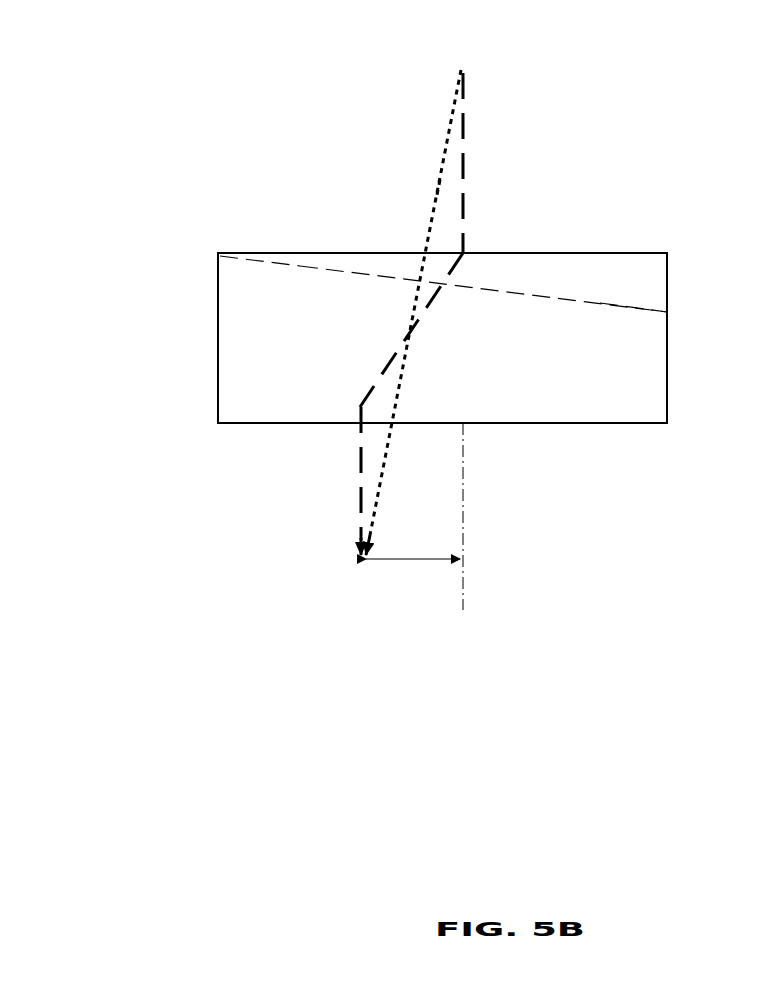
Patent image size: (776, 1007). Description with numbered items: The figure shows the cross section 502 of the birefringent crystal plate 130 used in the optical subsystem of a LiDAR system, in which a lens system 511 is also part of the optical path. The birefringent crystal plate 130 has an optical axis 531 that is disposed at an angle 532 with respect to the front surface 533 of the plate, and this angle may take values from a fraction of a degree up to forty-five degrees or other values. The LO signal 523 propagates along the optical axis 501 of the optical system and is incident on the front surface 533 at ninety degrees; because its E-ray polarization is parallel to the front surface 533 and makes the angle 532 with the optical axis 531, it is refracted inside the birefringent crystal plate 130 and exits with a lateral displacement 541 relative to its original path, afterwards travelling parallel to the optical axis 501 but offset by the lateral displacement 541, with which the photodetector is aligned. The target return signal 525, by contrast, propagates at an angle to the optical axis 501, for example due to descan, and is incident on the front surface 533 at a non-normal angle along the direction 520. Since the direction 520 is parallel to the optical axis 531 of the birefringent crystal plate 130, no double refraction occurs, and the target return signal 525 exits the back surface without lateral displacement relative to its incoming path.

The cross section 502 is at (88, 82).
The birefringent crystal plate 130 is at (588, 273).
The lens system 511 is at (466, 253).
The front surface 533 is at (260, 252).
The angle 532 is at (338, 268).
The optical axis of the birefringent crystal plate 531 is at (638, 308).
The LO signal 523 is at (463, 118).
The target return signal 525 is at (451, 127).
The direction 520 is at (435, 203).
The optical axis of the optical system 501 is at (463, 488).
The lateral displacement 541 is at (430, 559).